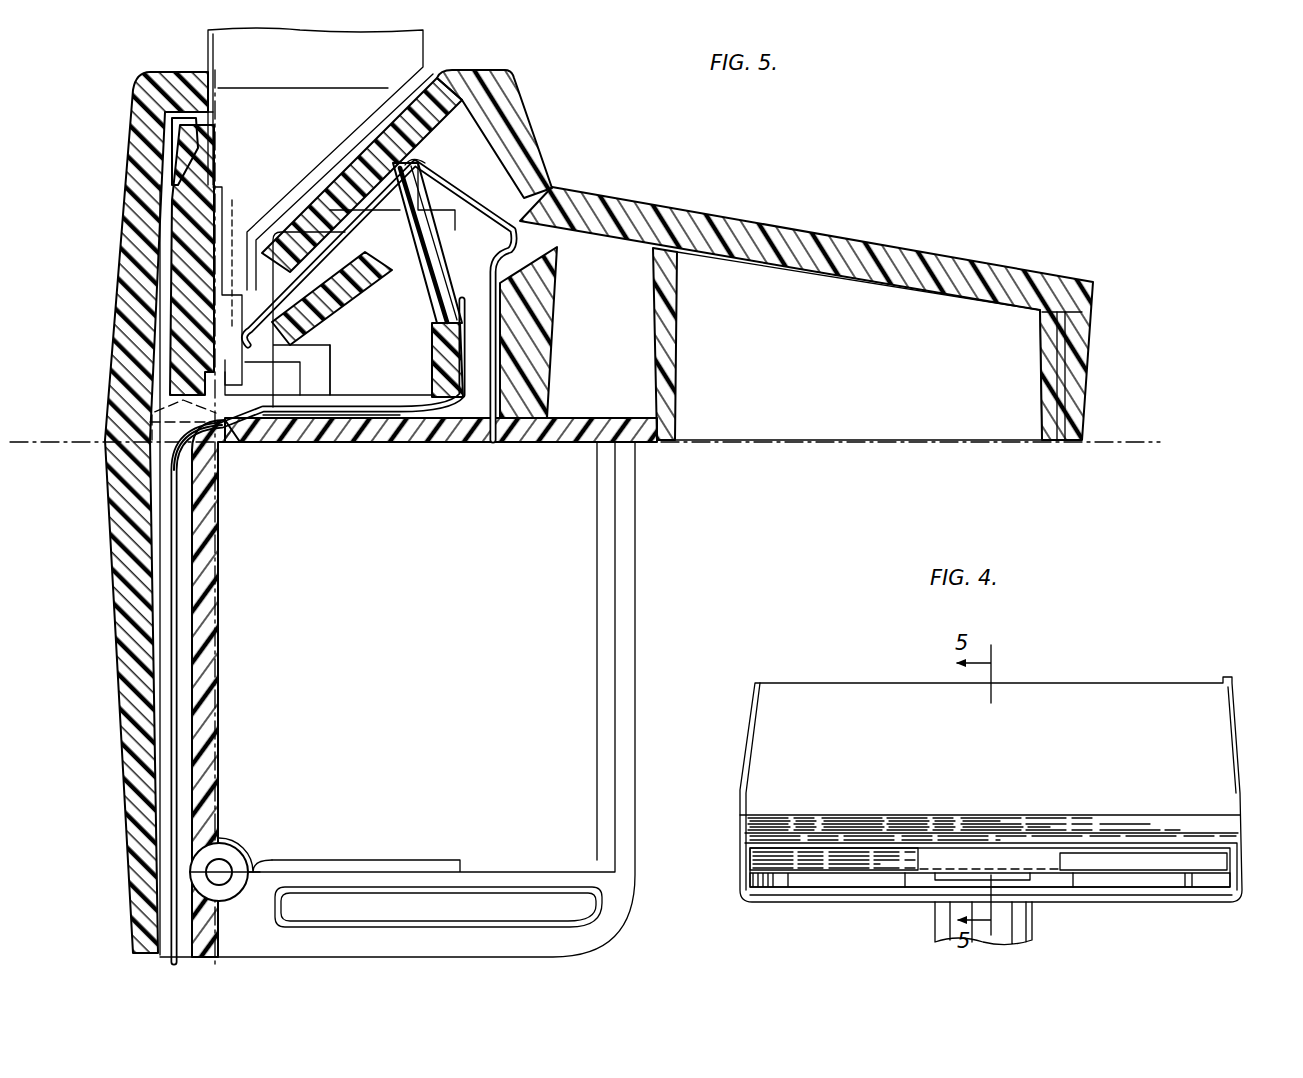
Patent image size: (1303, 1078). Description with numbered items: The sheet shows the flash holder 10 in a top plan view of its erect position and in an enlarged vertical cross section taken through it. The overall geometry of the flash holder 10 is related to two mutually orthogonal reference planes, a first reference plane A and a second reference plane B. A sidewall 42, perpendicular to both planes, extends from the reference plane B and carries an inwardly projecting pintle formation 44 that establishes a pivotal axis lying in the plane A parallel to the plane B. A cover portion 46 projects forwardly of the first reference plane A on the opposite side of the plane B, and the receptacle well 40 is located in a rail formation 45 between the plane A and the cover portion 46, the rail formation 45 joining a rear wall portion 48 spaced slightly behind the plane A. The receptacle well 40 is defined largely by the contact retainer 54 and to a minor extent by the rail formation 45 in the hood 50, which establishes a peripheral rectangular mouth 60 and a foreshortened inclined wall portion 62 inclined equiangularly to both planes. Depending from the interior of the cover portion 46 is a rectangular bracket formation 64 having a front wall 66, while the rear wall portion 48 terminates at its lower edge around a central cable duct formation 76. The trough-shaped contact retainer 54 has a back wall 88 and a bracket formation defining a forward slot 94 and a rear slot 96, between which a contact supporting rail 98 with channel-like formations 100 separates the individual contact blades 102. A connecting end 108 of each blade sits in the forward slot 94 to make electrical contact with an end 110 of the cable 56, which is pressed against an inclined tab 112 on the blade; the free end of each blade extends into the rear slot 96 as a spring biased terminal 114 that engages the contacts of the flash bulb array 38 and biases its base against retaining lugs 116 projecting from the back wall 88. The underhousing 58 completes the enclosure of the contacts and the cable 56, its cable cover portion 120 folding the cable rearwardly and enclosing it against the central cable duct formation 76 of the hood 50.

In FIG. 4, the flash holder 10 is at (1108, 665).
In FIG. 5, the flash bulb array 38 is at (208, 38).
In FIG. 5, the receptacle well 40 is at (430, 72).
In FIG. 4, the receptacle well 40 is at (1220, 882).
In FIG. 5, the sidewall 42 is at (428, 611).
In FIG. 5, the pintle formation 44 is at (240, 852).
In FIG. 5, the rail formation 45 is at (520, 120).
In FIG. 4, the rail formation 45 is at (1162, 816).
In FIG. 5, the cover portion 46 is at (995, 268).
In FIG. 4, the cover portion 46 is at (1024, 750).
In FIG. 5, the rear wall portion 48 is at (116, 320).
In FIG. 5, the hood 50 is at (606, 190).
In FIG. 5, the contact retainer 54 is at (180, 147).
In FIG. 5, the cable 56 is at (176, 600).
In FIG. 4, the cable 56 is at (1034, 932).
In FIG. 5, the underhousing 58 is at (350, 447).
In FIG. 5, the peripheral rectangular mouth 60 is at (215, 85).
In FIG. 5, the inclined wall portion 62 is at (332, 174).
In FIG. 4, the inclined wall portion 62 is at (1030, 855).
In FIG. 5, the rectangular bracket formation 64 is at (686, 352).
In FIG. 5, the front wall 66 is at (678, 322).
In FIG. 5, the central cable duct formation 76 is at (158, 548).
In FIG. 5, the back wall 88 is at (183, 230).
In FIG. 5, the forward slot 94 is at (488, 342).
In FIG. 5, the rear slot 96 is at (250, 432).
In FIG. 5, the contact supporting rail 98 is at (420, 243).
In FIG. 5, the channel-like formations 100 is at (440, 182).
In FIG. 5, the contact blades 102 is at (336, 263).
In FIG. 5, the connecting end 108 is at (540, 402).
In FIG. 5, the end of the cable 110 is at (442, 330).
In FIG. 5, the inclined tab 112 is at (470, 441).
In FIG. 5, the spring biased terminal 114 is at (280, 372).
In FIG. 5, the retaining lugs 116 is at (234, 225).
In FIG. 4, the retaining lugs 116 is at (1073, 886).
In FIG. 5, the cable cover portion 120 is at (218, 637).
In FIG. 5, the first reference plane A is at (220, 708).
In FIG. 5, the second reference plane B is at (1112, 442).